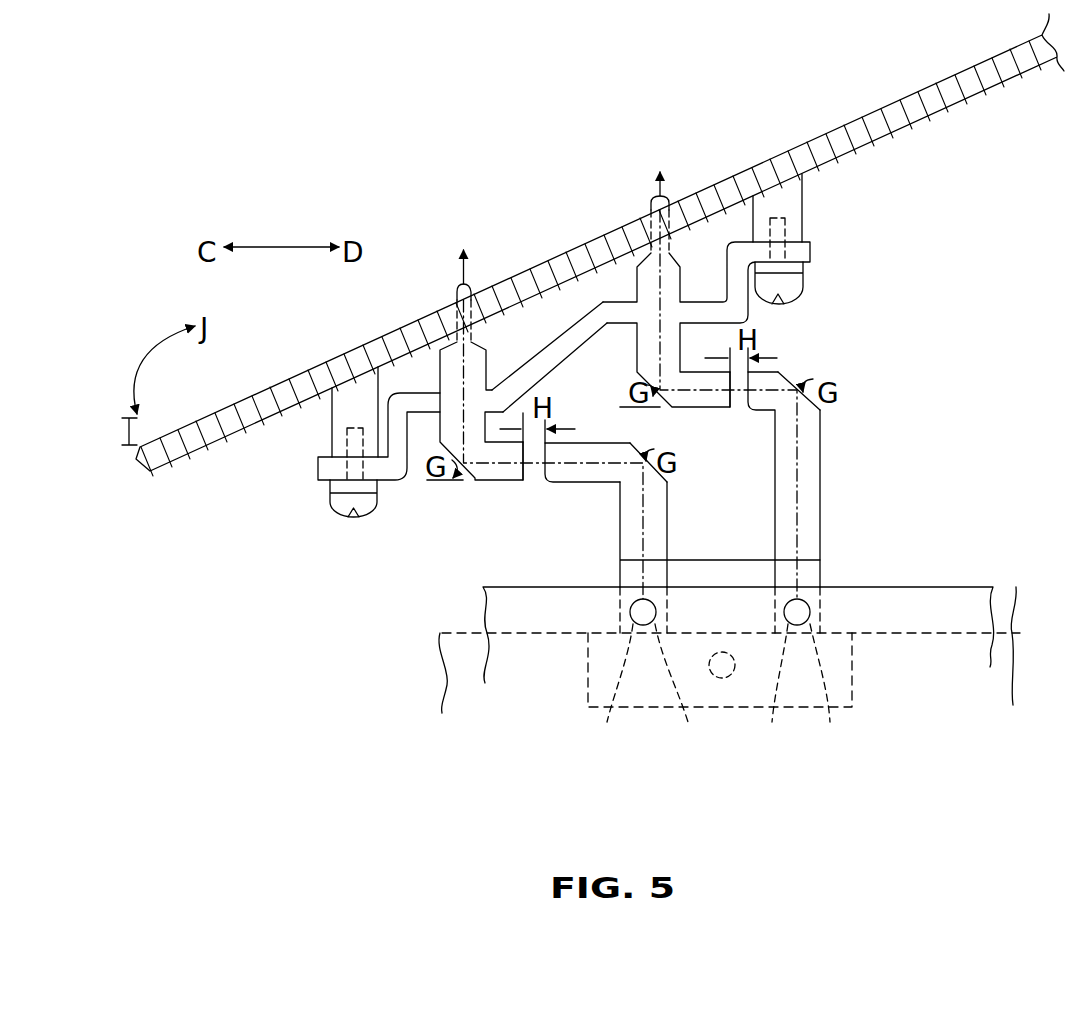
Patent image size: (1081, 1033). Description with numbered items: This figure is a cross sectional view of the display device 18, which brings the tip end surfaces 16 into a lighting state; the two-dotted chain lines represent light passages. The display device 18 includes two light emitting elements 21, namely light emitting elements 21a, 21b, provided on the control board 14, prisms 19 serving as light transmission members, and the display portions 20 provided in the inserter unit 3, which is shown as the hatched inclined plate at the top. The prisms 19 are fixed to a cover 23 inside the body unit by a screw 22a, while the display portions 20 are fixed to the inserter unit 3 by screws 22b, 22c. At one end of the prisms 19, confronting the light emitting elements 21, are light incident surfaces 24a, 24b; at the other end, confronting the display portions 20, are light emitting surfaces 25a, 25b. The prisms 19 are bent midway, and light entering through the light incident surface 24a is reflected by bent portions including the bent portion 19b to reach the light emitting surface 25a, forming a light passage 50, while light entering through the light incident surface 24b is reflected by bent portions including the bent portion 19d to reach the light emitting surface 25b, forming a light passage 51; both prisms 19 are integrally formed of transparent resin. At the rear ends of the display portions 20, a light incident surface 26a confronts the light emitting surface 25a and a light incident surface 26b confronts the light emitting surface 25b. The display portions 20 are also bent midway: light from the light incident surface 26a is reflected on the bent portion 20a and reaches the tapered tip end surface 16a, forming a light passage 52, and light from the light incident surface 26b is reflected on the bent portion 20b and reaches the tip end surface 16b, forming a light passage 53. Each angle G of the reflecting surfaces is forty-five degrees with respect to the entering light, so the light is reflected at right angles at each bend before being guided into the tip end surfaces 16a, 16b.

The inserter unit 3 is at (752, 164).
The control board 14 is at (927, 586).
The tip end surfaces 16 is at (577, 199).
The tip end surface 16a is at (478, 290).
The tip end surface 16b is at (648, 202).
The display device 18 is at (407, 578).
The prisms 19 is at (824, 480).
The bent portion 19b is at (670, 492).
The bent portion 19d is at (821, 399).
The display portions 20 is at (437, 375).
The bent portion 20a is at (440, 442).
The bent portion 20b is at (637, 379).
The light emitting elements 21 is at (720, 718).
The light emitting element 21a is at (689, 695).
The light emitting element 21b is at (775, 694).
The screw 22a is at (722, 652).
The screw 22b is at (341, 518).
The screw 22c is at (804, 282).
The cover 23 is at (1016, 587).
The light incident surface 24a is at (612, 682).
The light incident surface 24b is at (831, 681).
The light emitting surface 25a is at (542, 482).
The light emitting surface 25b is at (748, 409).
The light incident surface 26a is at (522, 482).
The light incident surface 26b is at (730, 412).
The light passage 50 is at (652, 540).
The light passage 51 is at (807, 429).
The light passage 52 is at (474, 374).
The light passage 53 is at (669, 309).